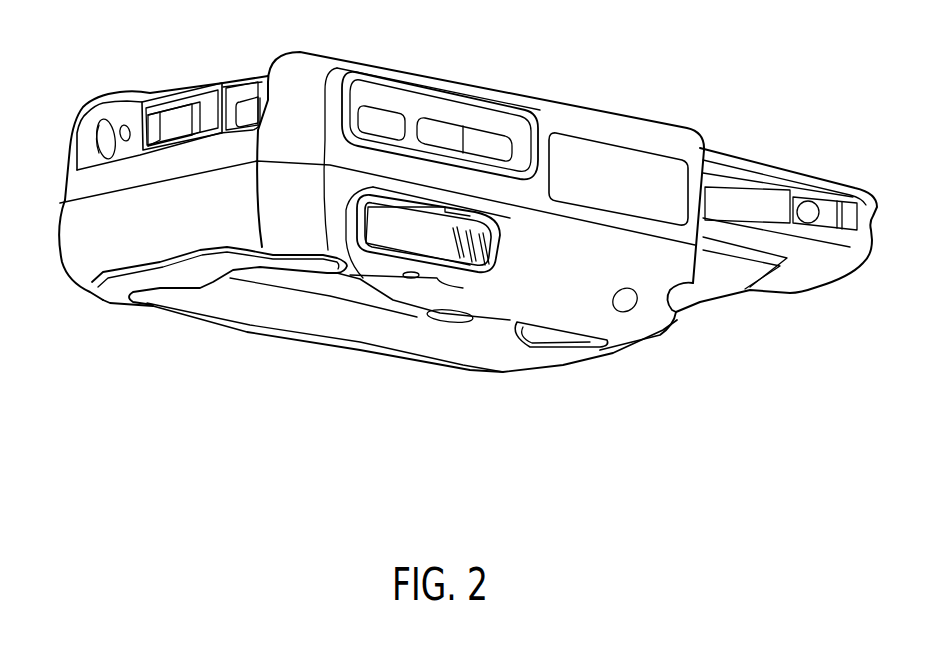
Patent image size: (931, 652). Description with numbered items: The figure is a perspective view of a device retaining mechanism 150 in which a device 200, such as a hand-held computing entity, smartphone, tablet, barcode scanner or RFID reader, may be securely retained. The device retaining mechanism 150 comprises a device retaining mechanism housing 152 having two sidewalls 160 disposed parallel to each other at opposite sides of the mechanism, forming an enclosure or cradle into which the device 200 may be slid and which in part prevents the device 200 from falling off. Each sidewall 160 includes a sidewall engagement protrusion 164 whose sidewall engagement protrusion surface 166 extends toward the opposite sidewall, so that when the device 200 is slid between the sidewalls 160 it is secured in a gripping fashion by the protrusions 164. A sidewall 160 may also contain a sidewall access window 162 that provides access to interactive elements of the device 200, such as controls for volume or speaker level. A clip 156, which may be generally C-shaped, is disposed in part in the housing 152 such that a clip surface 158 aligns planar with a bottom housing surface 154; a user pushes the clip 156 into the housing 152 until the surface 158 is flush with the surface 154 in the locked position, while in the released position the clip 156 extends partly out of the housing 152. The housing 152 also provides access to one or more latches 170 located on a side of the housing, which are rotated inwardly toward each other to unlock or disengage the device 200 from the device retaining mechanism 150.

The device retaining mechanism 150 is at (677, 485).
The device retaining mechanism housing 152 is at (580, 300).
The bottom housing surface 154 is at (357, 270).
The clip 156 is at (170, 275).
The clip surface 158 is at (280, 262).
The sidewall 160 is at (73, 130).
The sidewall access window 162 is at (423, 113).
The sidewall engagement protrusion 164 is at (128, 100).
The sidewall engagement protrusion surface 166 is at (112, 108).
The latch 170 is at (433, 242).
The device 200 is at (760, 183).